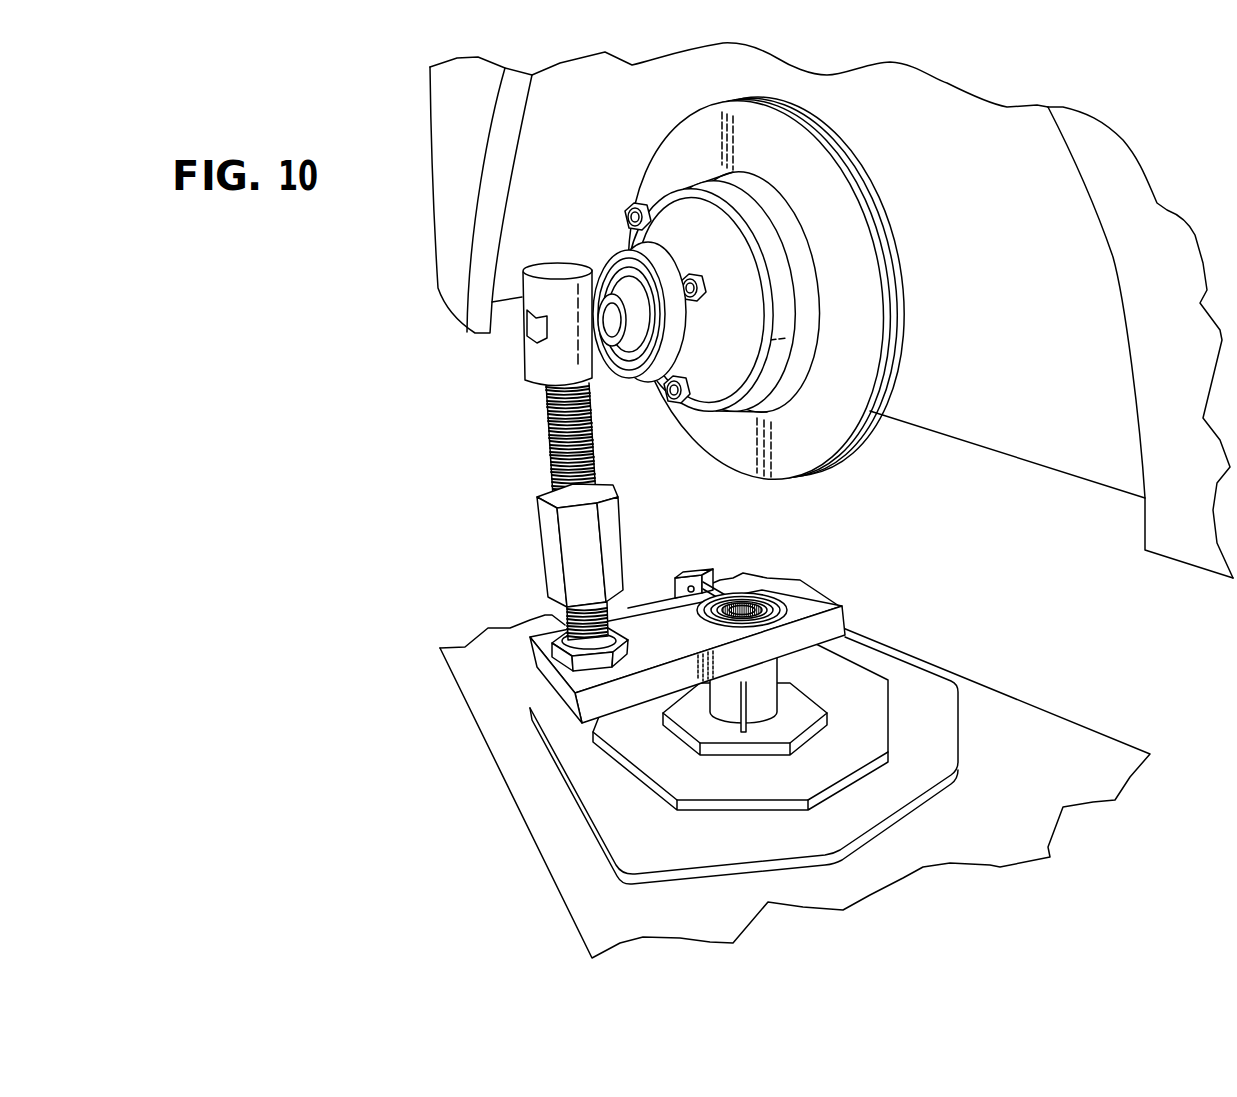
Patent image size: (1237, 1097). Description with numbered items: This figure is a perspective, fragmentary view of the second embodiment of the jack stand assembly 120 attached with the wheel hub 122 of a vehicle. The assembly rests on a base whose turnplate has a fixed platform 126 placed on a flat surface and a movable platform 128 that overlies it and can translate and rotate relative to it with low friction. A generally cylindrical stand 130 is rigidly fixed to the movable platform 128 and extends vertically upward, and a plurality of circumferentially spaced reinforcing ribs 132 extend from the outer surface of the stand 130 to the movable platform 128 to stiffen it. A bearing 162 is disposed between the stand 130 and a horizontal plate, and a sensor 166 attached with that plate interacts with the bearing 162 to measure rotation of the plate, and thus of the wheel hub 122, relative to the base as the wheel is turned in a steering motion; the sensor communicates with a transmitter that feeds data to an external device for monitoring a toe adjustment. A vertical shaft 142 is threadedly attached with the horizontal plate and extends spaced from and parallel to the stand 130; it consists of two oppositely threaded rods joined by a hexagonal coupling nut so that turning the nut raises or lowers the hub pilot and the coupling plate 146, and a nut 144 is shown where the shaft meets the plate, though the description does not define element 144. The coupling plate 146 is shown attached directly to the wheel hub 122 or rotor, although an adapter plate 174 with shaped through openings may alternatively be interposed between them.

The jack stand assembly 120 is at (495, 538).
The wheel hub 122 is at (785, 362).
The fixed platform 126 is at (833, 765).
The movable platform 128 is at (692, 723).
The stand 130 is at (783, 673).
The reinforcing ribs 132 is at (795, 693).
The vertical shaft 142 is at (547, 445).
The nut 144 is at (587, 660).
The coupling plate 146 is at (598, 258).
The bearing 162 is at (744, 596).
The sensor 166 is at (693, 571).
The adapter plate 174 is at (728, 223).